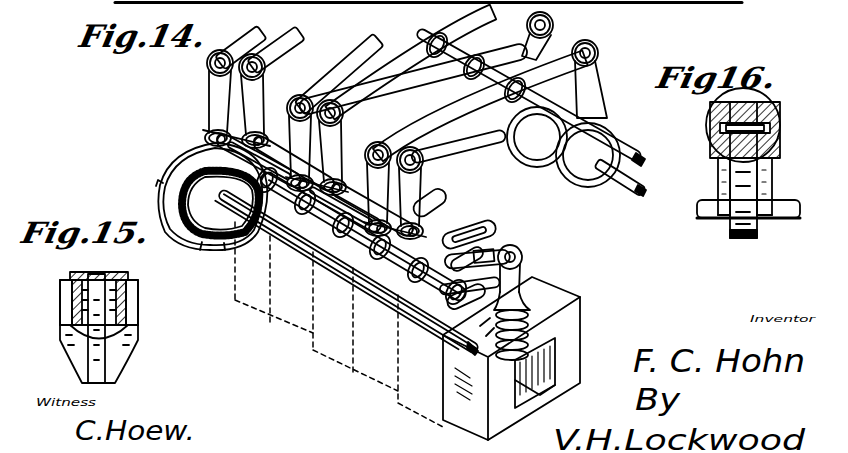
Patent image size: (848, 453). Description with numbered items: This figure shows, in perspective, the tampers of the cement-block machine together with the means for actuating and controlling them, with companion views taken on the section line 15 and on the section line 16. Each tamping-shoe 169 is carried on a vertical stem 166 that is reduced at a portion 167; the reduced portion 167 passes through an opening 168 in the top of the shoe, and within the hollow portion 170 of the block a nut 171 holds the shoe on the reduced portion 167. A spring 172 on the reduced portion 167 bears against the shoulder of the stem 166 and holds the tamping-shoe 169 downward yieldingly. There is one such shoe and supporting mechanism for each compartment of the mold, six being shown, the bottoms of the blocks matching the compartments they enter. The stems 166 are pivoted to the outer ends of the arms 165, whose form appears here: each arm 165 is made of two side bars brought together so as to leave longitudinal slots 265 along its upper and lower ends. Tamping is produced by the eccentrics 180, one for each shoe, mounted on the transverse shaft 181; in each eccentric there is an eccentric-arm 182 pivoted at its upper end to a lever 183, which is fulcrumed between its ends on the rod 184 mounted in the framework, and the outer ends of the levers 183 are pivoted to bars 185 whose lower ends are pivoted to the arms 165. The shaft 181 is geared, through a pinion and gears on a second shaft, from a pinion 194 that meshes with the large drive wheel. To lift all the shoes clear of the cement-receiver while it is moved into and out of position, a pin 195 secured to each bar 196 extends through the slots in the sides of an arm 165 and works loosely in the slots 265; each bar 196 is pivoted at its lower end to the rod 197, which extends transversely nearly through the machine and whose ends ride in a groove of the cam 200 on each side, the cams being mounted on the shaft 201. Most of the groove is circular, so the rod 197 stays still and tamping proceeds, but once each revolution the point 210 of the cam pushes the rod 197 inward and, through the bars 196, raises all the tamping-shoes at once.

In FIG. 14, the section line 15 is at (487, 228).
In FIG. 14, the section line 16 is at (544, 247).
In FIG. 14, the arm 165 is at (262, 140).
In FIG. 15, the arm 165 is at (128, 276).
In FIG. 14, the vertical stem 166 is at (517, 277).
In FIG. 15, the vertical stem 166 is at (125, 337).
In FIG. 16, the vertical stem 166 is at (780, 120).
In FIG. 14, the reduced portion 167 is at (526, 308).
In FIG. 14, the opening 168 is at (528, 350).
In FIG. 14, the tamping-shoe 169 is at (581, 322).
In FIG. 14, the hollow portion 170 is at (531, 392).
In FIG. 14, the nut 171 is at (536, 378).
In FIG. 14, the spring 172 is at (495, 323).
In FIG. 14, the eccentric 180 is at (509, 143).
In FIG. 14, the shaft 181 is at (625, 190).
In FIG. 14, the eccentric-arm 182 is at (550, 40).
In FIG. 14, the lever 183 is at (340, 64).
In FIG. 14, the rod 184 is at (627, 158).
In FIG. 14, the bar 185 is at (334, 133).
In FIG. 14, the pinion 194 is at (387, 259).
In FIG. 14, the pin 195 is at (503, 249).
In FIG. 16, the pin 195 is at (712, 112).
In FIG. 14, the bar 196 is at (346, 275).
In FIG. 15, the bar 196 is at (100, 352).
In FIG. 16, the bar 196 is at (736, 175).
In FIG. 16, the rod 197 is at (706, 220).
In FIG. 14, the cam 200 is at (172, 191).
In FIG. 14, the shaft 201 is at (323, 252).
In FIG. 14, the point of the cam 210 is at (214, 250).
In FIG. 15, the longitudinal slot 265 is at (96, 274).